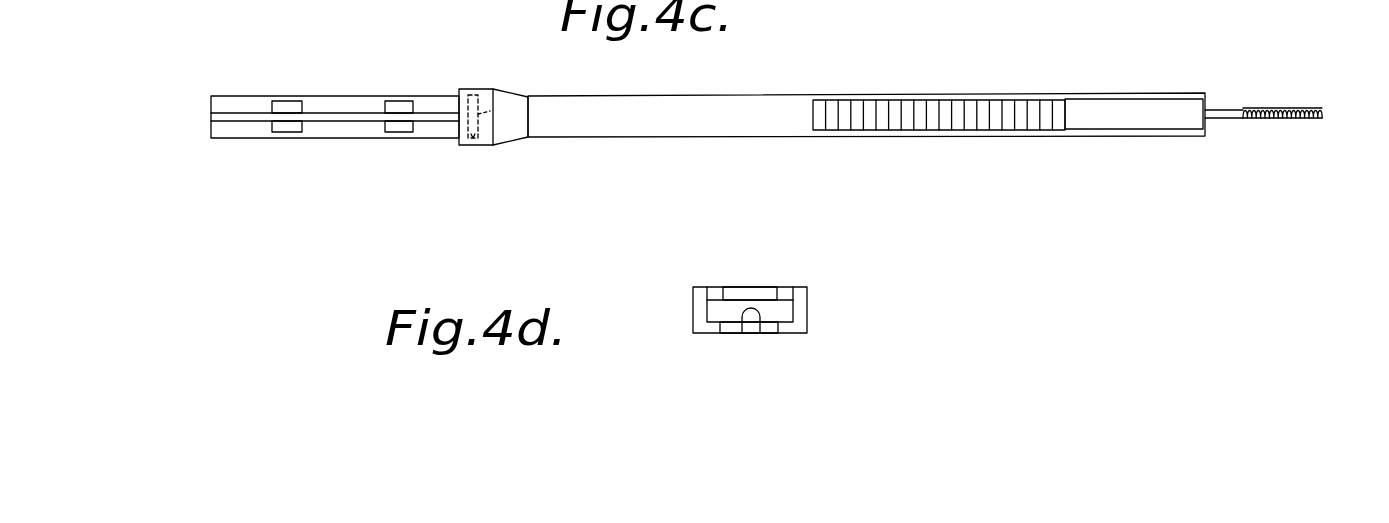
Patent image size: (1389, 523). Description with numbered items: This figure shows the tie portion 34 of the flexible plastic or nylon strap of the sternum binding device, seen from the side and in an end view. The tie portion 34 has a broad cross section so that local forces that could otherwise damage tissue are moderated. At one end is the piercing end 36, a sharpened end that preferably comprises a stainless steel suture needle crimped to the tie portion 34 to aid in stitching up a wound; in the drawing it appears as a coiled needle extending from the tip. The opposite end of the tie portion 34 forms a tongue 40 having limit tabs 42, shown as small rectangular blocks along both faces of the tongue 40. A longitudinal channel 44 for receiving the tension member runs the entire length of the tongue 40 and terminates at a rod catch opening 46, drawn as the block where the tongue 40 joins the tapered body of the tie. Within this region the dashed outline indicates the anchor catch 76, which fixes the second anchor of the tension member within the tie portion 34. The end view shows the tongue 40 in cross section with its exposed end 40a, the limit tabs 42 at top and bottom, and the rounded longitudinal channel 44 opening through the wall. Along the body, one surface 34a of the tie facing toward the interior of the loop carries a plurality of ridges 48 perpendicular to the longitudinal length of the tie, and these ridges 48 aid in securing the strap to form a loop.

In FIG. 4C, the tie portion 34 is at (1067, 92).
In FIG. 4C, the surface of tie facing toward the interior of the loop 34a is at (655, 118).
In FIG. 4C, the piercing end 36 is at (1287, 117).
In FIG. 4C, the tongue 40 is at (264, 93).
In FIG. 4D, the tongue 40 is at (713, 307).
In FIG. 4C, the exposed end 40a is at (211, 102).
In FIG. 4D, the exposed end 40a is at (782, 308).
In FIG. 4C, the limit tabs 42 is at (290, 107).
In FIG. 4D, the limit tabs 42 is at (753, 293).
In FIG. 4C, the longitudinal channel 44 is at (243, 118).
In FIG. 4D, the longitudinal channel 44 is at (750, 333).
In FIG. 4C, the rod catch opening 46 is at (498, 100).
In FIG. 4C, the ridges 48 is at (940, 113).
In FIG. 4C, the anchor catch 76 is at (475, 146).